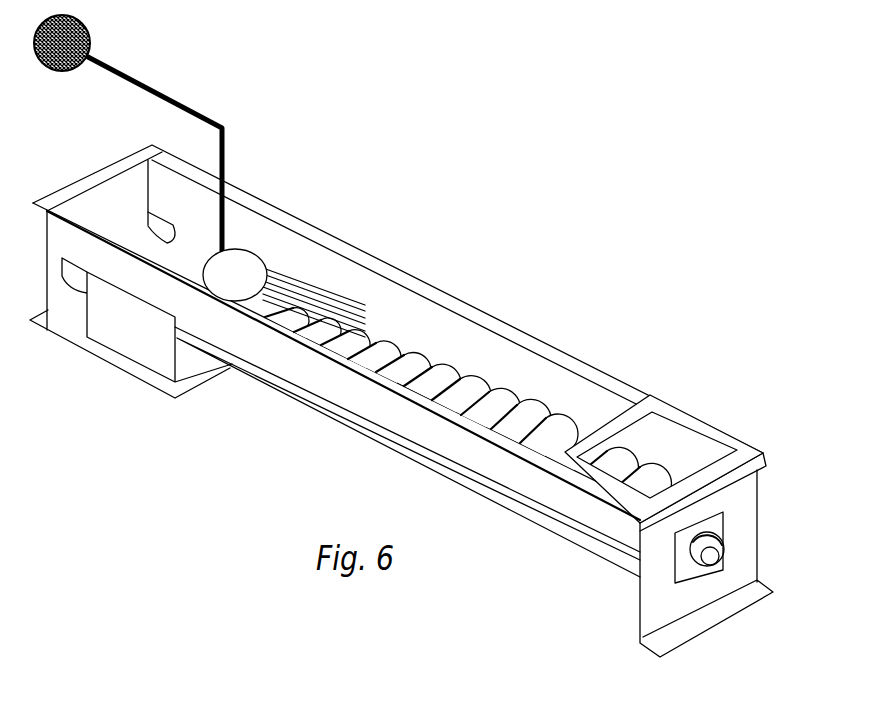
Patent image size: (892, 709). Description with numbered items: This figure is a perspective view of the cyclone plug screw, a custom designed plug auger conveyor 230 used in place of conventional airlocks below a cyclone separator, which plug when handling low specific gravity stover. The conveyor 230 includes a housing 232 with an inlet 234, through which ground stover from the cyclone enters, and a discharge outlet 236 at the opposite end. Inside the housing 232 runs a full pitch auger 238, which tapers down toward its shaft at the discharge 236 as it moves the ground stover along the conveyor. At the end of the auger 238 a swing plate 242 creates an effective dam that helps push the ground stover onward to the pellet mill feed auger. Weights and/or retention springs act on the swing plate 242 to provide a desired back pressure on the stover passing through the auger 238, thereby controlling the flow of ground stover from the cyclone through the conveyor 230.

The plug auger conveyor 230 is at (510, 256).
The housing 232 is at (385, 428).
The inlet 234 is at (667, 445).
The discharge outlet 236 is at (120, 370).
The full pitch auger 238 is at (470, 328).
The swing plate 242 is at (258, 268).